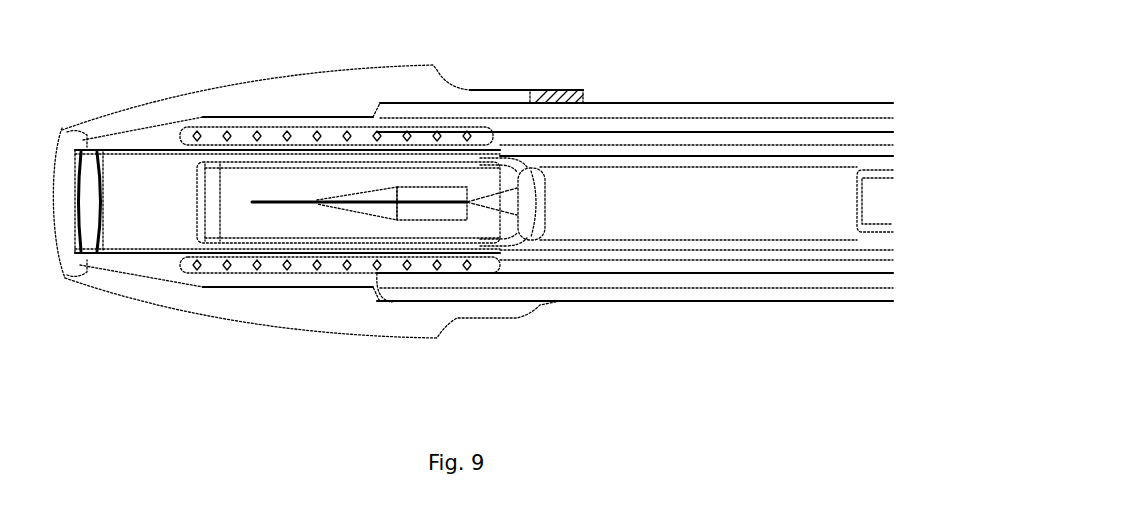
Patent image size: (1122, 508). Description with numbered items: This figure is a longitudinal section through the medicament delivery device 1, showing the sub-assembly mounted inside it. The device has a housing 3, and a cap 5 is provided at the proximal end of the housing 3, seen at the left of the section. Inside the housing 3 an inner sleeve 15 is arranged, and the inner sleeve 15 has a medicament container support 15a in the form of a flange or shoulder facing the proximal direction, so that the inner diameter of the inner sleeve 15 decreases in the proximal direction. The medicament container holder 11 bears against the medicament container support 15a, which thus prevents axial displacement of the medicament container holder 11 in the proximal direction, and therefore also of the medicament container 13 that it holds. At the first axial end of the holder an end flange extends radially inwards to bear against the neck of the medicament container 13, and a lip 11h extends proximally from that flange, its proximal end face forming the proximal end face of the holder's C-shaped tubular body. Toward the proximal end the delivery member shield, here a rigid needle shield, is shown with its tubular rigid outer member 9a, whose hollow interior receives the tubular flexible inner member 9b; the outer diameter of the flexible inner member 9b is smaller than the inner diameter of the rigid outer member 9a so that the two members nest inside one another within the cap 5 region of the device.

The medicament delivery device 1 is at (487, 27).
The housing 3 is at (708, 103).
The cap 5 is at (328, 75).
The rigid outer member 9a is at (425, 245).
The flexible inner member 9b is at (268, 237).
The medicament container holder 11 is at (547, 155).
The lip 11h is at (523, 158).
The medicament container 13 is at (760, 213).
The inner sleeve 15 is at (500, 140).
The medicament container support 15a is at (508, 255).